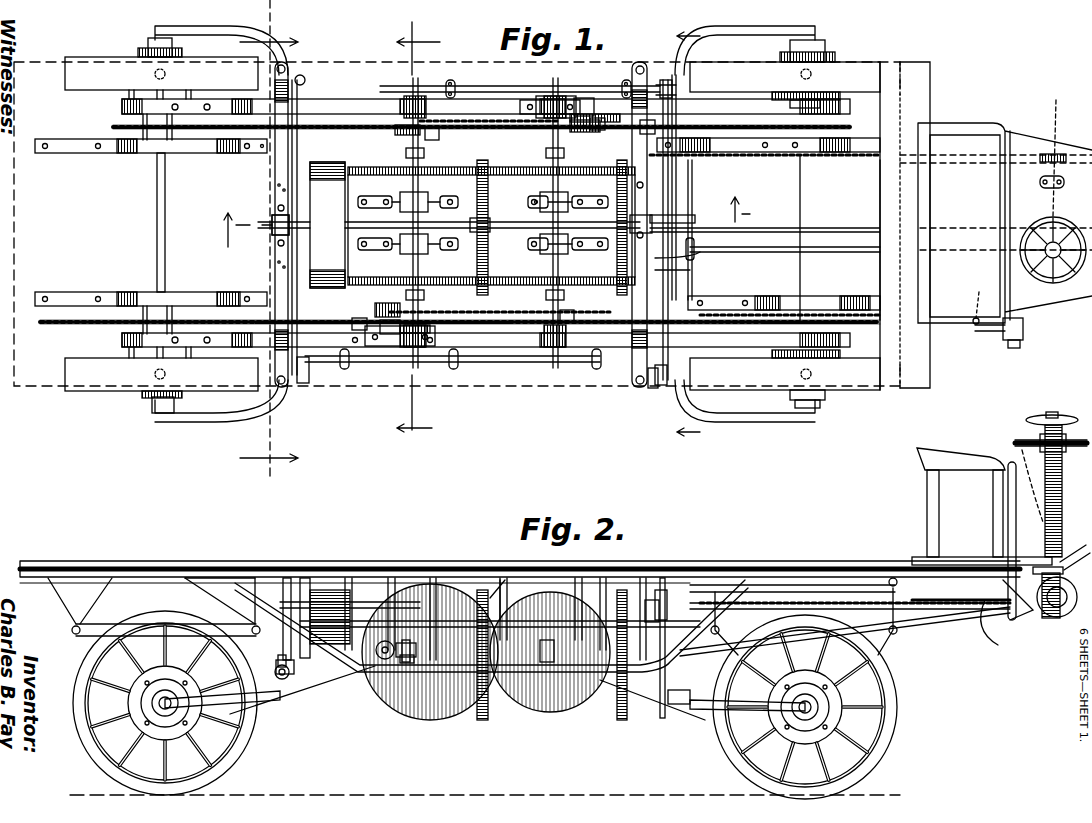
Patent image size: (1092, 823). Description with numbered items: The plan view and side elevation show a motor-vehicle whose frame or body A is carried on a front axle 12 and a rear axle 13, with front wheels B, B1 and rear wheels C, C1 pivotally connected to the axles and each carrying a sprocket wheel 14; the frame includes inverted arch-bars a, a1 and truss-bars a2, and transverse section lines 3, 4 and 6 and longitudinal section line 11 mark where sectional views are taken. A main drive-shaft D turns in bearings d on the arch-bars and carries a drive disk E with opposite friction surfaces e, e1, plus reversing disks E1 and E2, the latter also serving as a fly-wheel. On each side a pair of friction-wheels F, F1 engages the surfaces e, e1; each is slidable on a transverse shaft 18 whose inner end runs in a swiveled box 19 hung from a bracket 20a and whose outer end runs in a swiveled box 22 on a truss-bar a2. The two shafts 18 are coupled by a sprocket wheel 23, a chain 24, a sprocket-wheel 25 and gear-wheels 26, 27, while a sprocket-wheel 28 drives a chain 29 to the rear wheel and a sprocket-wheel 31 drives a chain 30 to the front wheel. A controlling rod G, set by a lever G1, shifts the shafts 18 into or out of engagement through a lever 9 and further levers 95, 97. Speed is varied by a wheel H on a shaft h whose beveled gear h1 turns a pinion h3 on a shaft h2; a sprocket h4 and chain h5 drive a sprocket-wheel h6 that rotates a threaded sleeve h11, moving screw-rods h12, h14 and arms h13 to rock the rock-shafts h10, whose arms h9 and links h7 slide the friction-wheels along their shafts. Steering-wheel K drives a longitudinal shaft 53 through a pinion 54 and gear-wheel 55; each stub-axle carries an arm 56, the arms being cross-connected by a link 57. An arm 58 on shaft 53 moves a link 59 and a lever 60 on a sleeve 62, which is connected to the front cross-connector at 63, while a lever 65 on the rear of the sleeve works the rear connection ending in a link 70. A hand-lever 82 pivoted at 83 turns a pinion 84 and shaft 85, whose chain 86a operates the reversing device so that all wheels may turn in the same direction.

In FIG. 1, the rear wheel C is at (100, 58).
In FIG. 1, the rear wheel C1 is at (105, 400).
In FIG. 2, the rear wheel C1 is at (153, 613).
In FIG. 1, the front wheel B is at (869, 65).
In FIG. 1, the front wheel B1 is at (872, 390).
In FIG. 2, the front wheel B1 is at (912, 677).
In FIG. 1, the frame or body A is at (920, 62).
In FIG. 1, the arm 56 is at (272, 46).
In FIG. 2, the arm 56 is at (255, 700).
In FIG. 1, the truss-bar a2 is at (332, 100).
In FIG. 2, the truss-bar a2 is at (730, 576).
In FIG. 1, the inverted arch-bar a1 is at (292, 382).
In FIG. 2, the inverted arch-bar a1 is at (296, 576).
In FIG. 1, the inverted arch-bar a is at (640, 372).
In FIG. 2, the inverted arch-bar a is at (650, 576).
In FIG. 1, the sprocket wheel 14 is at (128, 130).
In FIG. 2, the sprocket wheel 14 is at (245, 742).
In FIG. 1, the chain 29 is at (332, 128).
In FIG. 2, the chain 29 is at (690, 700).
In FIG. 1, the rear axle 13 is at (167, 200).
In FIG. 1, the section line 11 is at (479, 219).
In FIG. 1, the section line 6 is at (266, 246).
In FIG. 1, the section line 3 is at (411, 227).
In FIG. 1, the section line 4 is at (698, 229).
In FIG. 1, the lever or frame 65 is at (309, 373).
In FIG. 2, the lever or frame 65 is at (305, 578).
In FIG. 1, the longitudinal sleeve 62 is at (362, 370).
In FIG. 2, the longitudinal sleeve 62 is at (460, 620).
In FIG. 1, the connection point 63 is at (672, 80).
In FIG. 1, the link h7 is at (413, 88).
In FIG. 2, the link h7 is at (418, 576).
In FIG. 1, the rock-shaft h10 is at (472, 90).
In FIG. 2, the rock-shaft h10 is at (440, 576).
In FIG. 1, the arm h9 is at (562, 85).
In FIG. 2, the arm h9 is at (440, 560).
In FIG. 1, the swiveled box 22 is at (568, 100).
In FIG. 2, the swiveled box 22 is at (488, 692).
In FIG. 1, the gear-wheel 27 is at (540, 104).
In FIG. 2, the gear-wheel 27 is at (388, 690).
In FIG. 1, the gear-wheel 26 is at (590, 100).
In FIG. 2, the gear-wheel 26 is at (365, 708).
In FIG. 1, the sprocket-wheel 28 is at (398, 133).
In FIG. 1, the sprocket wheel 23 is at (422, 140).
In FIG. 1, the chain 24 is at (522, 134).
In FIG. 2, the chain 24 is at (462, 650).
In FIG. 1, the sprocket-wheel 25 is at (584, 133).
In FIG. 1, the sprocket-wheel 31 is at (618, 115).
In FIG. 1, the chain 30 is at (704, 110).
In FIG. 2, the chain 30 is at (292, 720).
In FIG. 1, the link 70 is at (305, 76).
In FIG. 1, the friction drive-disk E2 is at (301, 225).
In FIG. 2, the friction drive-disk E2 is at (340, 588).
In FIG. 1, the friction-wheel F is at (491, 226).
In FIG. 2, the friction-wheel F is at (410, 718).
In FIG. 1, the friction-wheel F1 is at (581, 226).
In FIG. 2, the friction-wheel F1 is at (560, 712).
In FIG. 1, the main drive-wheel or disk E is at (490, 252).
In FIG. 2, the main drive-wheel or disk E is at (483, 722).
In FIG. 1, the friction drive-disk E1 is at (611, 227).
In FIG. 2, the friction drive-disk E1 is at (622, 722).
In FIG. 1, the friction drive-surface e is at (524, 190).
In FIG. 1, the friction drive-surface e1 is at (488, 190).
In FIG. 1, the transversely extending shaft 18 is at (410, 186).
In FIG. 1, the lever 95 is at (372, 212).
In FIG. 1, the lever 97 is at (512, 246).
In FIG. 1, the lever 9 is at (607, 193).
In FIG. 1, the swiveled box 19 is at (550, 257).
In FIG. 1, the bracket 20a is at (538, 200).
In FIG. 1, the bearing d is at (272, 234).
In FIG. 1, the main drive-shaft D is at (695, 205).
In FIG. 1, the sleeve h11 is at (700, 208).
In FIG. 1, the rod h12 is at (663, 147).
In FIG. 1, the chain h5 is at (796, 165).
In FIG. 2, the chain h5 is at (958, 580).
In FIG. 1, the sprocket-wheel h6 is at (705, 65).
In FIG. 1, the operating-arm h13 is at (660, 426).
In FIG. 2, the operating-arm h13 is at (712, 576).
In FIG. 1, the front axle 12 is at (808, 201).
In FIG. 1, the controlling rod G is at (845, 232).
In FIG. 2, the controlling rod G is at (850, 585).
In FIG. 1, the arm 58 is at (700, 242).
In FIG. 1, the link 59 is at (705, 258).
In FIG. 1, the link 57 is at (692, 276).
In FIG. 2, the link 57 is at (280, 680).
In FIG. 1, the rod h14 is at (688, 262).
In FIG. 1, the steering shaft 53 is at (856, 250).
In FIG. 2, the steering shaft 53 is at (962, 600).
In FIG. 1, the shaft 85 is at (760, 348).
In FIG. 2, the shaft 85 is at (812, 600).
In FIG. 1, the chain 86a is at (605, 440).
In FIG. 1, the lever 60 is at (652, 390).
In FIG. 2, the lever 60 is at (670, 578).
In FIG. 1, the shaft h is at (988, 212).
In FIG. 2, the shaft h is at (1062, 508).
In FIG. 1, the shaft h2 is at (1040, 205).
In FIG. 1, the steering-wheel K is at (1076, 290).
In FIG. 2, the steering-wheel K is at (1020, 442).
In FIG. 1, the controller wheel H is at (1045, 285).
In FIG. 1, the sprocket wheel h4 is at (1060, 148).
In FIG. 2, the sprocket wheel h4 is at (1065, 640).
In FIG. 1, the hand-lever 82 is at (1012, 348).
In FIG. 2, the hand-lever 82 is at (1008, 500).
In FIG. 1, the pinion 84 is at (985, 297).
In FIG. 2, the lever G1 is at (1062, 496).
In FIG. 2, the pinion 54 is at (1048, 568).
In FIG. 2, the pinion h3 is at (1076, 565).
In FIG. 2, the beveled gear h1 is at (1050, 620).
In FIG. 2, the gear-wheel 55 is at (1012, 625).
In FIG. 2, the pivot 83 is at (1005, 630).